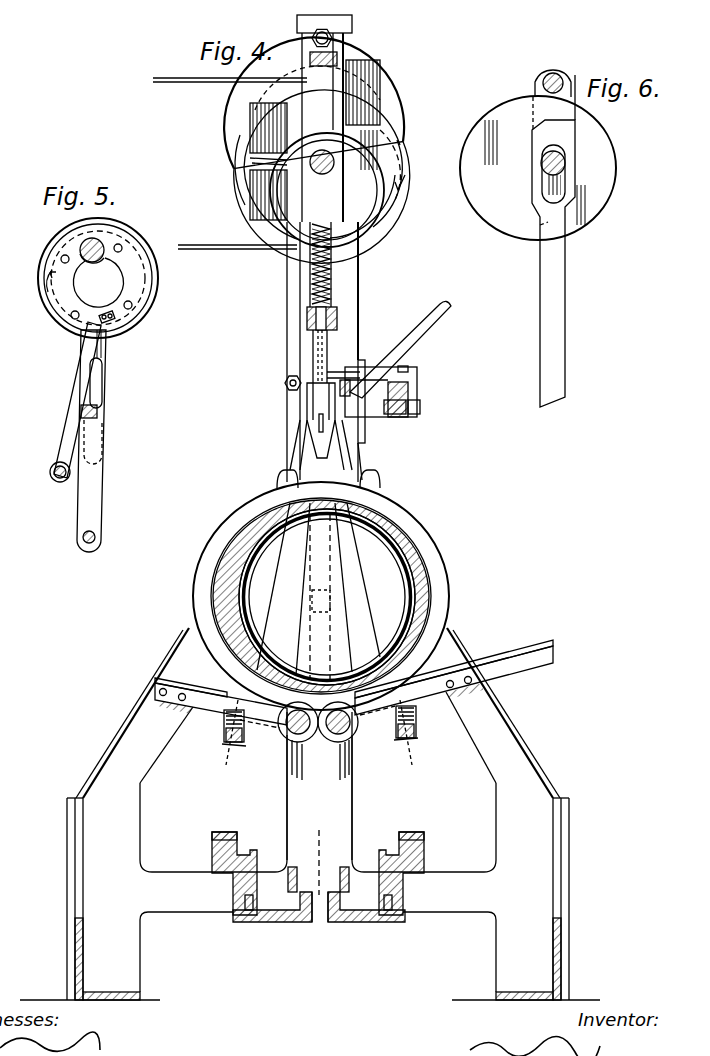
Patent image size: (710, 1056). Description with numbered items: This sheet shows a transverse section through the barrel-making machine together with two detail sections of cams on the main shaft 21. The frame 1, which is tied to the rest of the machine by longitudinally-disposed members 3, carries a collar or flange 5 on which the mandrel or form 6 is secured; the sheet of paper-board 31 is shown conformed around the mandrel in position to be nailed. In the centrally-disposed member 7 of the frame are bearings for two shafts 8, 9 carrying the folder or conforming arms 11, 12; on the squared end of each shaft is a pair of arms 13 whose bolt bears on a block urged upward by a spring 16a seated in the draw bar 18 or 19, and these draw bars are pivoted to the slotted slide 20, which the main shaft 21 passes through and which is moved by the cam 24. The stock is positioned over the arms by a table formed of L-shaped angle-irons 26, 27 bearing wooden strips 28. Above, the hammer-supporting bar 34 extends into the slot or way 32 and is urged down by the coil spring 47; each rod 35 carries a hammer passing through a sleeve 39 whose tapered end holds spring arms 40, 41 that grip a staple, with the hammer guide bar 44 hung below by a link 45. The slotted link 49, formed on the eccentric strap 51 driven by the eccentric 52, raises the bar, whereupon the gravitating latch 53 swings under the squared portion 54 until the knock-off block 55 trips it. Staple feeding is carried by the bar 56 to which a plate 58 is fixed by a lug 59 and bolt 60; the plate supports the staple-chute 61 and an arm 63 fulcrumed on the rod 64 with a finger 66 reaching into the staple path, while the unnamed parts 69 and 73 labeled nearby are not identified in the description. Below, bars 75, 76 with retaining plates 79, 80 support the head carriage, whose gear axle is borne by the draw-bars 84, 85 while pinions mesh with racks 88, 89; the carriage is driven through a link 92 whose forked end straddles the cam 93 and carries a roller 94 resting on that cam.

In FIG. 4, the frame 1 is at (265, 912).
In FIG. 4, the longitudinally-disposed members 3 is at (83, 932).
In FIG. 4, the collar or flange 5 is at (362, 520).
In FIG. 4, the mandrel or form 6 is at (420, 572).
In FIG. 4, the centrally-disposed member 7 is at (352, 784).
In FIG. 4, the shaft 8 is at (350, 736).
In FIG. 4, the shaft 9 is at (290, 738).
In FIG. 4, the folder or conforming arms 11 is at (426, 538).
In FIG. 4, the folder or conforming arms 12 is at (214, 546).
In FIG. 4, the arm 13 is at (322, 739).
In FIG. 4, the spring 16a is at (232, 746).
In FIG. 4, the draw bar 18 is at (416, 720).
In FIG. 4, the draw bar 19 is at (226, 732).
In FIG. 4, the slotted slide 20 is at (352, 58).
In FIG. 4, the main shaft 21 is at (311, 171).
In FIG. 5, the main shaft 21 is at (98, 262).
In FIG. 6, the main shaft 21 is at (545, 166).
In FIG. 4, the cam 24 is at (402, 105).
In FIG. 4, the L-shaped angle-iron 26 is at (210, 705).
In FIG. 4, the L-shaped angle-iron 27 is at (514, 662).
In FIG. 4, the wooden strips 28 is at (172, 682).
In FIG. 4, the sheet of paper-board 31 is at (404, 506).
In FIG. 4, the slot or way 32 is at (335, 280).
In FIG. 4, the hammer-supporting bar 34 is at (338, 314).
In FIG. 4, the rod or bar 35 is at (313, 355).
In FIG. 4, the sleeve 39 is at (316, 440).
In FIG. 4, the spring arm 40 is at (308, 462).
In FIG. 4, the spring arm 41 is at (364, 466).
In FIG. 4, the hammer guide bar 44 is at (352, 452).
In FIG. 5, the link 45 is at (100, 488).
In FIG. 4, the coil spring 47 is at (312, 268).
In FIG. 5, the slotted link 49 is at (102, 392).
In FIG. 4, the eccentric strap 51 is at (366, 244).
In FIG. 5, the eccentric strap 51 is at (122, 328).
In FIG. 4, the eccentric 52 is at (378, 224).
In FIG. 5, the eccentric 52 is at (150, 295).
In FIG. 5, the gravitating latch 53 is at (68, 428).
In FIG. 5, the squared portion 54 is at (98, 412).
In FIG. 5, the knock-off block 55 is at (116, 320).
In FIG. 4, the bar 56 is at (410, 398).
In FIG. 4, the plate 58 is at (418, 386).
In FIG. 4, the lug 59 is at (398, 419).
In FIG. 4, the machine screw or bolt 60 is at (421, 410).
In FIG. 4, the staple-chute 61 is at (431, 320).
In FIG. 4, the arm 63 is at (352, 384).
In FIG. 4, the rod 64 is at (410, 375).
In FIG. 4, the finger 66 is at (342, 378).
In FIG. 4, the pin 69 is at (318, 400).
In FIG. 4, the column step 73 is at (372, 424).
In FIG. 4, the bar 75 is at (240, 880).
In FIG. 4, the bar 76 is at (403, 886).
In FIG. 4, the plate 79 is at (236, 838).
In FIG. 4, the plate 80 is at (420, 838).
In FIG. 4, the link or draw-bar 84 is at (288, 880).
In FIG. 4, the link or draw-bar 85 is at (349, 880).
In FIG. 4, the rack 88 is at (314, 900).
In FIG. 4, the rack 89 is at (329, 905).
In FIG. 6, the link 92 is at (555, 262).
In FIG. 4, the cam 93 is at (240, 162).
In FIG. 6, the cam 93 is at (588, 210).
In FIG. 6, the roller 94 is at (535, 88).